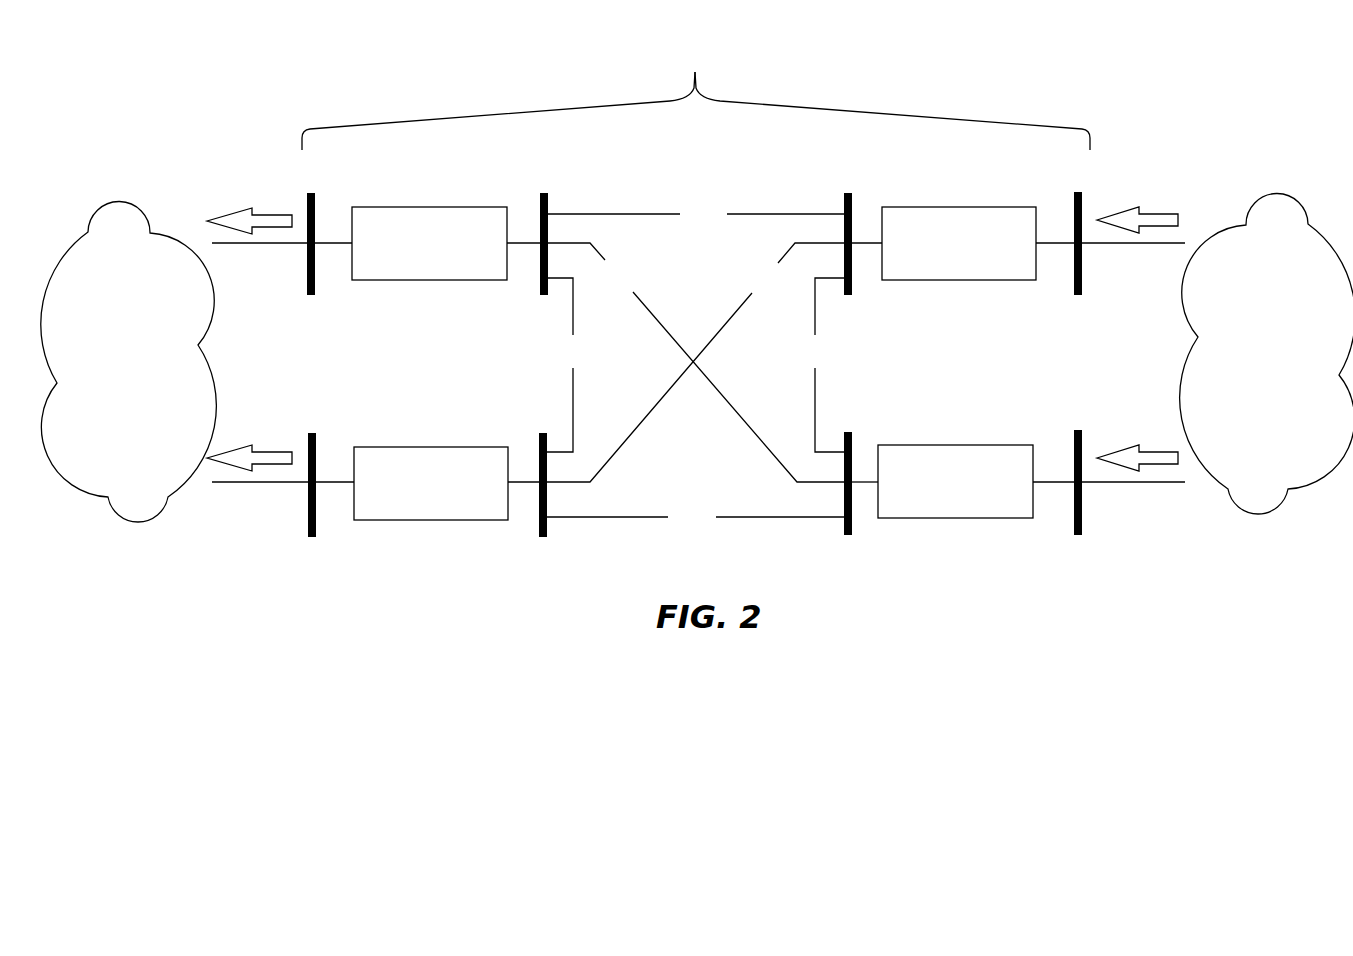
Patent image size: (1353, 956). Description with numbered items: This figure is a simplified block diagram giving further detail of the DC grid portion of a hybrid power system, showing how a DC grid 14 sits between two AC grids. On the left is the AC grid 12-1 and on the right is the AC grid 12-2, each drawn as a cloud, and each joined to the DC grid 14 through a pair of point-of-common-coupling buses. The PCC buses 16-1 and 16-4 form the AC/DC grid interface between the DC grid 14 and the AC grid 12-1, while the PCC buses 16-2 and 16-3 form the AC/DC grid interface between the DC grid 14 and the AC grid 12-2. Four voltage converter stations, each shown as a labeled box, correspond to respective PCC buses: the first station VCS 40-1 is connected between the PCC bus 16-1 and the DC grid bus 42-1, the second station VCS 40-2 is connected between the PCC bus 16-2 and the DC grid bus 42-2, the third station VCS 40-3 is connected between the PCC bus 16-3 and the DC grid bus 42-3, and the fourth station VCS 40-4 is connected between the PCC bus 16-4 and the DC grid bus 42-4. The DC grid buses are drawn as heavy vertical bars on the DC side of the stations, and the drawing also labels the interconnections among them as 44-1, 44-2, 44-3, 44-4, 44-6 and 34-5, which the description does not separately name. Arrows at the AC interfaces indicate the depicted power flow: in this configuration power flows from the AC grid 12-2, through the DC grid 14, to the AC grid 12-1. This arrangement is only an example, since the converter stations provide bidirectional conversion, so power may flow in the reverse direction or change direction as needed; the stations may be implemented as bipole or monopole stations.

The DC grid 14 is at (696, 96).
The AC grid 12-1 is at (104, 405).
The AC grid 12-2 is at (1248, 398).
The PCC bus 16-1 is at (312, 290).
The PCC bus 16-2 is at (1079, 287).
The PCC bus 16-3 is at (1079, 526).
The PCC bus 16-4 is at (312, 531).
The VCS 40-1 is at (429, 243).
The VCS 40-2 is at (959, 243).
The VCS 40-3 is at (955, 481).
The VCS 40-4 is at (431, 483).
The DC grid bus 42-1 is at (537, 229).
The DC grid bus 42-2 is at (853, 229).
The DC grid bus 42-3 is at (852, 502).
The DC grid bus 42-4 is at (540, 502).
The DC line 44-1 is at (696, 214).
The DC line 44-2 is at (695, 362).
The DC line 44-3 is at (820, 365).
The DC line 44-4 is at (696, 362).
The DC line 44-6 is at (569, 365).
The DC line 34-5 is at (695, 517).